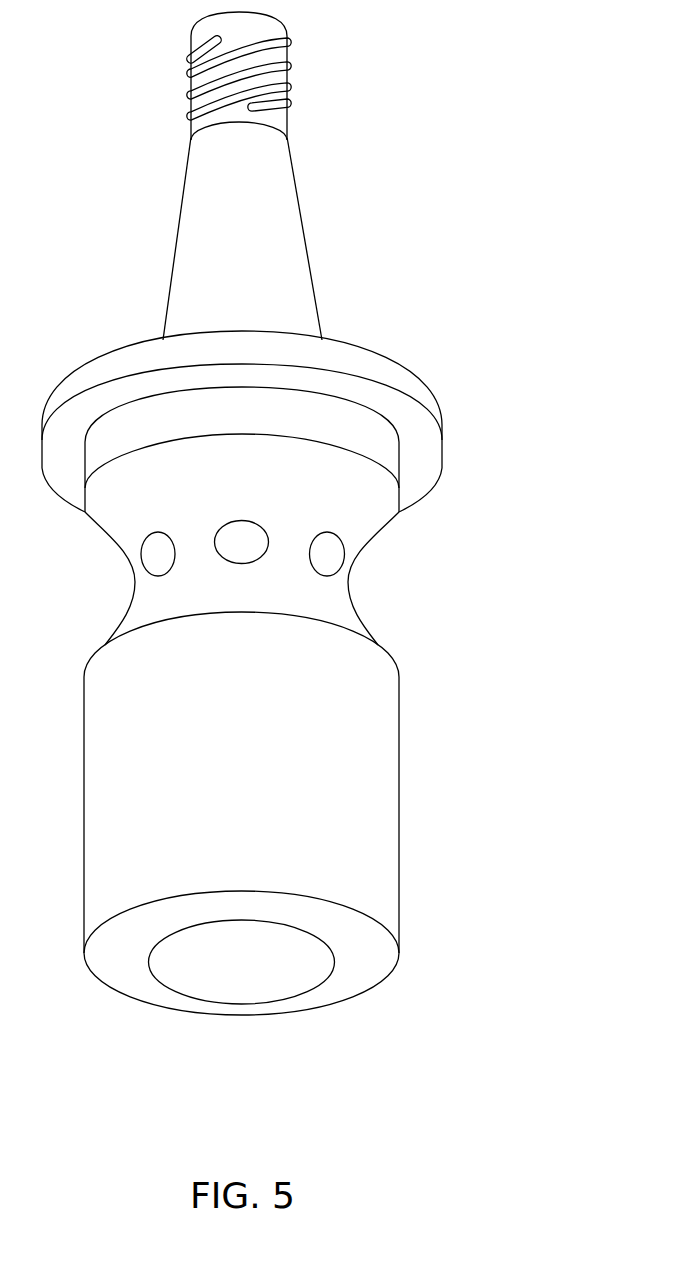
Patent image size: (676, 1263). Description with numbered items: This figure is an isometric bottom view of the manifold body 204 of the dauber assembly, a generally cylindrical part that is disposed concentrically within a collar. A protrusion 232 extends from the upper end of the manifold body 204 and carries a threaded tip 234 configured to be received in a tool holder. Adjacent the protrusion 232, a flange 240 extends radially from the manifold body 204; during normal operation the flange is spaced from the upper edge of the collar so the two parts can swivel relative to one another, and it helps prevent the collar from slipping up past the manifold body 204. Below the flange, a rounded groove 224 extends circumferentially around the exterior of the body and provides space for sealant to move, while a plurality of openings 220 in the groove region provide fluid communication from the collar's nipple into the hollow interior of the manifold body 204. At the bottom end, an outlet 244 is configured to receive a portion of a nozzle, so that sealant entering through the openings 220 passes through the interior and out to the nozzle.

The manifold body 204 is at (383, 852).
The openings 220 is at (258, 560).
The rounded groove 224 is at (363, 627).
The protrusion 232 is at (293, 222).
The threaded tip 234 is at (280, 55).
The flange 240 is at (422, 410).
The outlet 244 is at (273, 963).